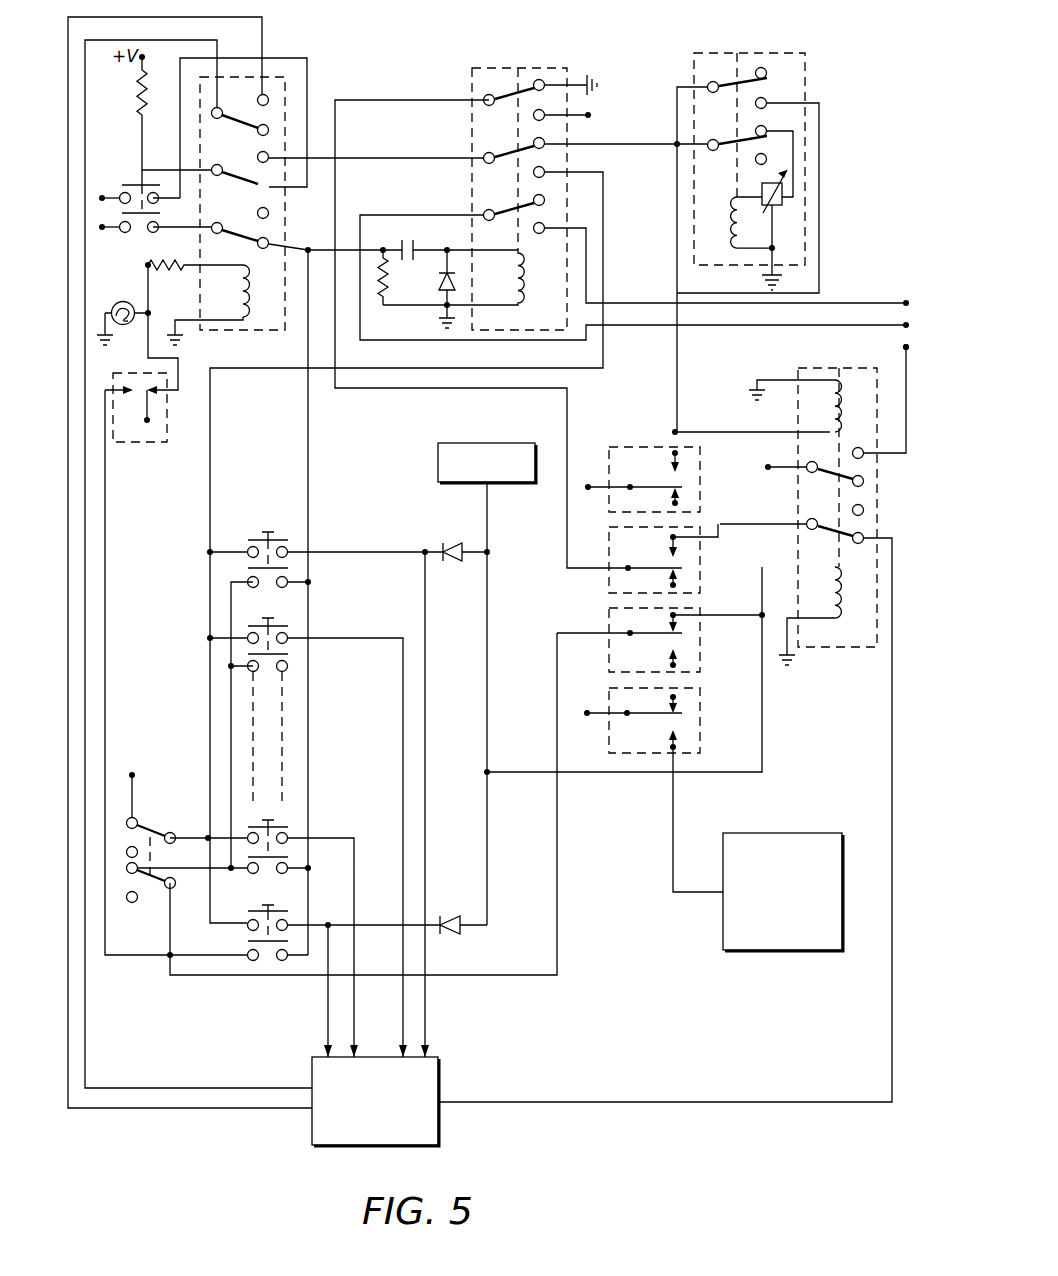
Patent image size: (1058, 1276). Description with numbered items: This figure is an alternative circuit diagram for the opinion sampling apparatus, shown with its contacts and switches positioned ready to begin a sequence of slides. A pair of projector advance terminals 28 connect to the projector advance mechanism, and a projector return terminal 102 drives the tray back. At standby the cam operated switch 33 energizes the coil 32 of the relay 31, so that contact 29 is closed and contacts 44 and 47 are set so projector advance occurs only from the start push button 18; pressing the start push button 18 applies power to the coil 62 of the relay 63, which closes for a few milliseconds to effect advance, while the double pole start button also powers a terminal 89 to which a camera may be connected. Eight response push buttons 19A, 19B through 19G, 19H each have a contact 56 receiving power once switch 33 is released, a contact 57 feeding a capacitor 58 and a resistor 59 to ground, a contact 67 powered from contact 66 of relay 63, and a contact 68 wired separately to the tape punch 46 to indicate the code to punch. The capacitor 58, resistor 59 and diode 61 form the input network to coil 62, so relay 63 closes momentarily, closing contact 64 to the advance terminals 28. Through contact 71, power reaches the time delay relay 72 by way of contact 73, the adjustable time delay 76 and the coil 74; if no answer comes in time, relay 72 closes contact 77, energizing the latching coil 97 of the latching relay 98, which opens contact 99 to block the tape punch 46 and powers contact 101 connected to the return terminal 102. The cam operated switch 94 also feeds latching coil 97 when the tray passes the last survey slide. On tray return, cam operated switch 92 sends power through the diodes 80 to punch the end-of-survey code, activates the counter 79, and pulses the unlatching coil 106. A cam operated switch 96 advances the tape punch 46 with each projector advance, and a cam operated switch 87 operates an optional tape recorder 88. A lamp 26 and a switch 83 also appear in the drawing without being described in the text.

The start push button 18 is at (142, 183).
The response push button 19A is at (268, 530).
The response push button 19B is at (272, 620).
The response push button 19G is at (272, 820).
The response push button 19H is at (272, 905).
The indicator lamp 26 is at (118, 302).
The projector advance terminals 28 is at (908, 324).
The contact 29 is at (268, 241).
The relay 31 is at (262, 78).
The coil 32 is at (243, 320).
The cam operated switch 33 is at (130, 442).
The contact 44 is at (268, 97).
The tape punch 46 is at (384, 1141).
The contact 47 is at (268, 155).
The contact 56 is at (248, 668).
The contact 57 is at (286, 669).
The capacitor 58 is at (407, 247).
The resistor 59 is at (386, 270).
The diode 61 is at (441, 290).
The coil 62 is at (522, 303).
The relay 63 is at (485, 68).
The contact 64 is at (545, 226).
The contact 66 is at (545, 170).
The contact 67 is at (250, 547).
The contact 68 is at (287, 549).
The contact 71 is at (545, 141).
The time delay relay 72 is at (752, 53).
The contact 73 is at (767, 129).
The coil 74 is at (737, 250).
The adjustable time delay 76 is at (782, 197).
The contact 77 is at (767, 101).
The counter 79 is at (490, 443).
The diodes 80 is at (443, 548).
The switch 83 is at (140, 828).
The cam operated switch 87 is at (700, 705).
The tape recorder 88 is at (794, 937).
The terminal 89 is at (102, 196).
The cam operated switch 92 is at (700, 650).
The cam operated switch 94 is at (700, 470).
The cam operated switch 96 is at (700, 550).
The latching coil 97 is at (830, 400).
The latching relay 98 is at (864, 484).
The contact 99 is at (864, 536).
The contact 101 is at (864, 457).
The projector return terminal 102 is at (906, 360).
The unlatching coil 106 is at (838, 620).